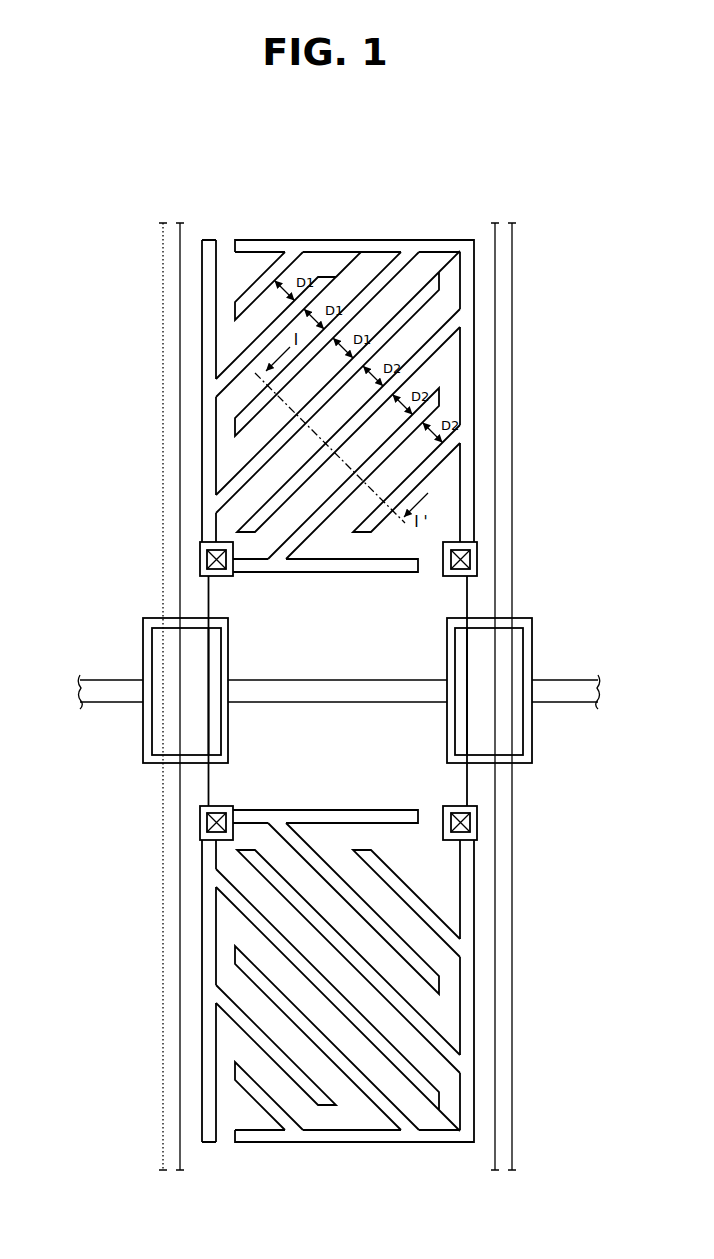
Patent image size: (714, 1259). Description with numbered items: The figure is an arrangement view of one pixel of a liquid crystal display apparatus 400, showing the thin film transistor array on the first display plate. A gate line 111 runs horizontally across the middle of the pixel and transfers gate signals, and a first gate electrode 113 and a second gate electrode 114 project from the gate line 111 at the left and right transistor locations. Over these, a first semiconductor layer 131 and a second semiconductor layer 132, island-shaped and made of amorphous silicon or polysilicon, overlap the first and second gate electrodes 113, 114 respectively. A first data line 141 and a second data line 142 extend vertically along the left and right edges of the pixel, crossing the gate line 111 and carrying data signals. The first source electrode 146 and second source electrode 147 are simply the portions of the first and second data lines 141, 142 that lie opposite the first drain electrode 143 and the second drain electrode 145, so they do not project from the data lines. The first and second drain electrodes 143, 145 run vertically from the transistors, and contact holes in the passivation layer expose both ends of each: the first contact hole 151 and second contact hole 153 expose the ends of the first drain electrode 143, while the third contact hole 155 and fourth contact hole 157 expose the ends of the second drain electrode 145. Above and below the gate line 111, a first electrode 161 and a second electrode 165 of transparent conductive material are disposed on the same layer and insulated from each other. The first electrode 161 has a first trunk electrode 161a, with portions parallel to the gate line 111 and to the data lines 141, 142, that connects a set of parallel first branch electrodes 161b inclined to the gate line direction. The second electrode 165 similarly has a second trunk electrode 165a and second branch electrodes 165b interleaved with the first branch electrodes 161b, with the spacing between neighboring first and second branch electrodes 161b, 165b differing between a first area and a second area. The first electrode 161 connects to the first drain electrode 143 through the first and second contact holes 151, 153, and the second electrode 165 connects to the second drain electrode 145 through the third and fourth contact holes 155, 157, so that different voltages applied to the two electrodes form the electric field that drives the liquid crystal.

The display apparatus 400 is at (106, 172).
The gate line 111 is at (108, 703).
The first gate electrode 113 is at (222, 618).
The second gate electrode 114 is at (453, 618).
The first semiconductor layer 131 is at (188, 681).
The second semiconductor layer 132 is at (489, 681).
The first data line 141 is at (162, 994).
The second data line 142 is at (513, 994).
The first drain electrode 143 is at (205, 600).
The second drain electrode 145 is at (470, 600).
The first source electrode 146 is at (182, 652).
The second source electrode 147 is at (495, 652).
The first contact hole 151 is at (200, 560).
The second contact hole 153 is at (200, 825).
The third contact hole 155 is at (477, 558).
The fourth contact hole 157 is at (477, 822).
The first electrode 161 is at (205, 168).
The first trunk electrode 161a is at (208, 237).
The first branch electrodes 161b is at (269, 328).
The second electrode 165 is at (432, 168).
The second trunk electrode 165a is at (463, 238).
The second branch electrodes 165b is at (363, 288).